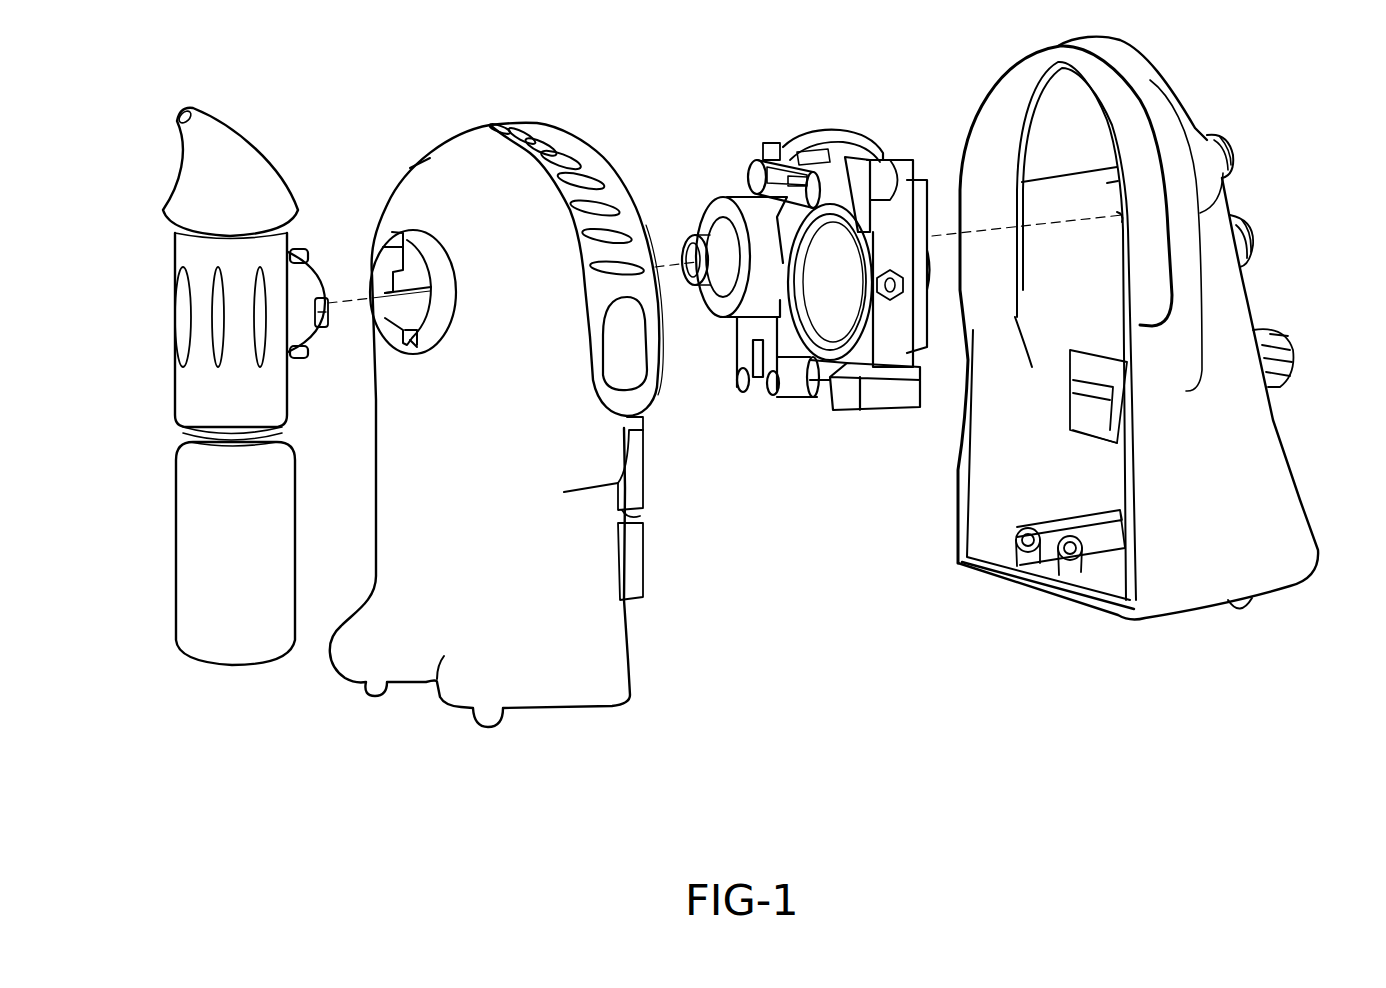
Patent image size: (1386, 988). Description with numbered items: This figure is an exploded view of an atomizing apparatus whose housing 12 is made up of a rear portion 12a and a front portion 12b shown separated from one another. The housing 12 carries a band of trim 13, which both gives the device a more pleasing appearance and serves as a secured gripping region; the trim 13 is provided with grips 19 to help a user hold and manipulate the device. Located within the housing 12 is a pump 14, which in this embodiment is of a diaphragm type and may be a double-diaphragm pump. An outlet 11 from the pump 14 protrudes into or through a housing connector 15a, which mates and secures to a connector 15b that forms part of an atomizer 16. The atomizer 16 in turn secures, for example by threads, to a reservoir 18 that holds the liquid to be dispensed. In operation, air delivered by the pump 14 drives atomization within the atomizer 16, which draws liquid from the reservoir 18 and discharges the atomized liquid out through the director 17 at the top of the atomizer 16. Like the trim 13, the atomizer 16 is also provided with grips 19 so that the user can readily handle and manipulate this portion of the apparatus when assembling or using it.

The outlet 11 is at (716, 257).
The housing 12 is at (822, 437).
The rear portion 12a is at (1138, 328).
The front portion 12b is at (498, 397).
The trim 13 is at (557, 121).
The pump 14 is at (806, 214).
The housing connector 15a is at (378, 272).
The connector 15b is at (310, 330).
The atomizer 16 is at (231, 336).
The director 17 is at (230, 173).
The reservoir 18 is at (235, 553).
The grips 19 is at (603, 170).